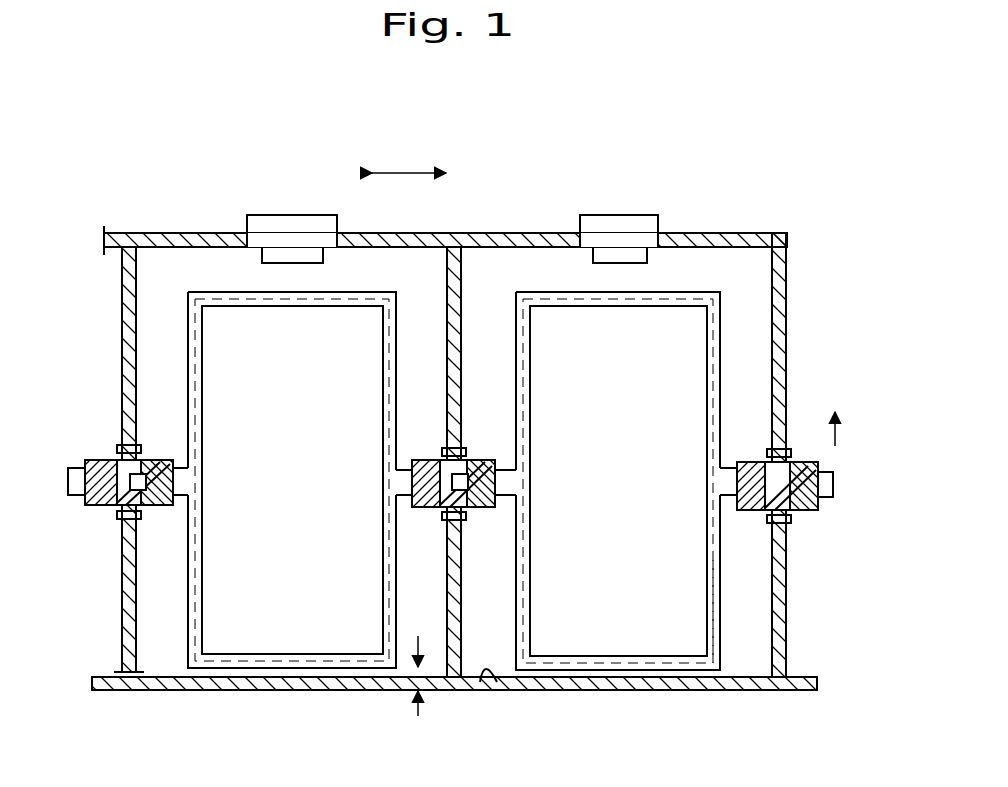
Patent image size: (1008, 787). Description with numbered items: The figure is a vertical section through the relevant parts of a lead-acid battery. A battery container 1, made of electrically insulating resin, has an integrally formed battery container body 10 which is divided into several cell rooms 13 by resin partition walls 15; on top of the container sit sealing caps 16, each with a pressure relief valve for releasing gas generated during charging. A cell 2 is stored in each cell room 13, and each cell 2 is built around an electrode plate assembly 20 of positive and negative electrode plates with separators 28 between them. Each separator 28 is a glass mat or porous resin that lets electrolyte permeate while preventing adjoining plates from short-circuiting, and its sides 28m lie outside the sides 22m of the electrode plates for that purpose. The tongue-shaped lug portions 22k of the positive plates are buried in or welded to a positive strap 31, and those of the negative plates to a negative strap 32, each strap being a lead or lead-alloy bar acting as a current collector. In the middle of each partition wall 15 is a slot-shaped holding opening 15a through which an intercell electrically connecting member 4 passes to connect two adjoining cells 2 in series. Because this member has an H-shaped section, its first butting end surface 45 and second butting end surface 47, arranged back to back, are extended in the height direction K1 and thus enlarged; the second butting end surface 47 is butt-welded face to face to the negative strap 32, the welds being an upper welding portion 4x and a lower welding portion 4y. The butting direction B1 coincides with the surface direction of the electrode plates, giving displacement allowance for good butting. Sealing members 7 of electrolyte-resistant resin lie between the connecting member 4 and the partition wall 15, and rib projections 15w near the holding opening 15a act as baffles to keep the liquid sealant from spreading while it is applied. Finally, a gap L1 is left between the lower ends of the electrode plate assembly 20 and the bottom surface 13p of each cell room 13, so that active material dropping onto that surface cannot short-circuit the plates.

The battery container 1 is at (788, 330).
The cell 2 is at (188, 392).
The intercell electrically connecting member 4 is at (472, 462).
The upper welding portion 4x is at (108, 463).
The lower welding portion 4y is at (150, 508).
The sealing member 7 is at (477, 512).
The battery container body 10 is at (788, 297).
The cell room 13 is at (108, 266).
The bottom surface 13p is at (497, 682).
The partition wall 15 is at (131, 268).
The holding opening 15a is at (143, 503).
The rib projection 15w is at (115, 515).
The sealing cap 16 is at (288, 229).
The electrode plate assembly 20 is at (188, 420).
The lug portion 22k is at (180, 482).
The side 22m is at (710, 620).
The separator 28 is at (188, 630).
The side 28m is at (762, 679).
The positive strap 31 is at (150, 502).
The negative strap 32 is at (97, 507).
The first butting end surface 45 is at (497, 487).
The second butting end surface 47 is at (407, 482).
The butting direction B1 is at (403, 173).
The height direction K1 is at (835, 430).
The gap L1 is at (418, 655).